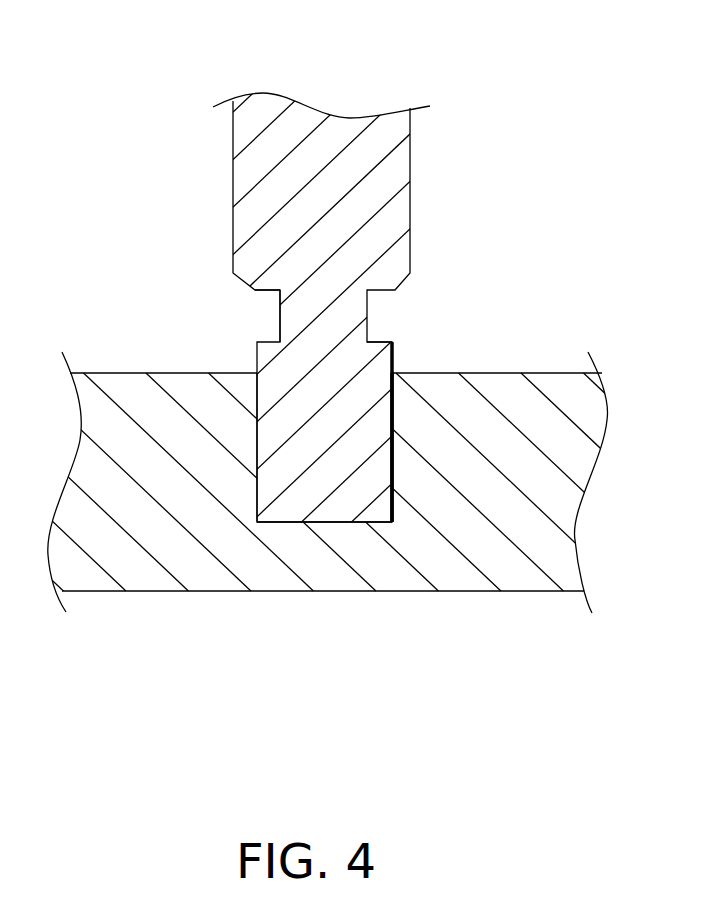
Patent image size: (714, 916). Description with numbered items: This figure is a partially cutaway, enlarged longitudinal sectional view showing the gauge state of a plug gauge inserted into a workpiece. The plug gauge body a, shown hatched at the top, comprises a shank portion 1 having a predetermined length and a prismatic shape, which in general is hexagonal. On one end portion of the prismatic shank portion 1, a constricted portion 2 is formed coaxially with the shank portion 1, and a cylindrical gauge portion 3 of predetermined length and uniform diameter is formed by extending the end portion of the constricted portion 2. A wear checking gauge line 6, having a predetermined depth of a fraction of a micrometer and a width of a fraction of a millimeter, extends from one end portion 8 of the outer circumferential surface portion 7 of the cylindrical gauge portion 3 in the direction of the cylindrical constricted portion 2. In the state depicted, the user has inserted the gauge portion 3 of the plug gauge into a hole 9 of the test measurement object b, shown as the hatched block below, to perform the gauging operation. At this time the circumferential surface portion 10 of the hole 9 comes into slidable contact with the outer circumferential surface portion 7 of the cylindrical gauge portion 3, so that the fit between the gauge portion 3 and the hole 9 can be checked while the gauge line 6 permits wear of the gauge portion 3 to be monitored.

The plug gauge body a is at (357, 267).
The test measurement object b is at (505, 388).
The shank portion 1 is at (398, 163).
The constricted portion 2 is at (280, 303).
The cylindrical gauge portion 3 is at (335, 510).
The wear checking gauge line 6 is at (396, 470).
The outer circumferential surface portion 7 is at (259, 486).
The end portion 8 is at (300, 510).
The hole 9 is at (260, 434).
The circumferential surface portion 10 is at (396, 392).